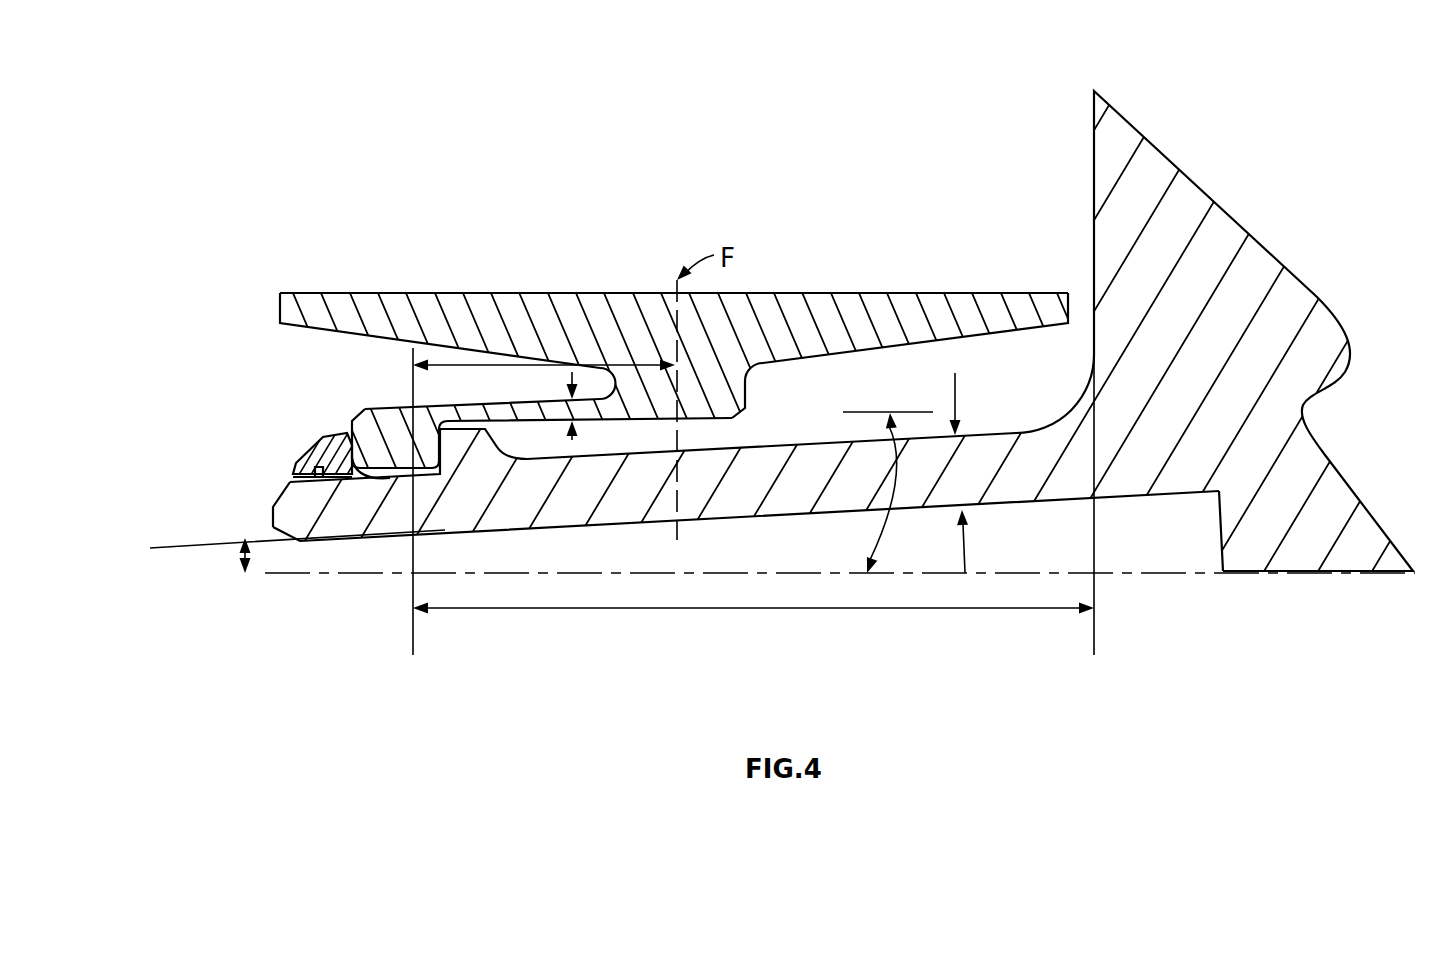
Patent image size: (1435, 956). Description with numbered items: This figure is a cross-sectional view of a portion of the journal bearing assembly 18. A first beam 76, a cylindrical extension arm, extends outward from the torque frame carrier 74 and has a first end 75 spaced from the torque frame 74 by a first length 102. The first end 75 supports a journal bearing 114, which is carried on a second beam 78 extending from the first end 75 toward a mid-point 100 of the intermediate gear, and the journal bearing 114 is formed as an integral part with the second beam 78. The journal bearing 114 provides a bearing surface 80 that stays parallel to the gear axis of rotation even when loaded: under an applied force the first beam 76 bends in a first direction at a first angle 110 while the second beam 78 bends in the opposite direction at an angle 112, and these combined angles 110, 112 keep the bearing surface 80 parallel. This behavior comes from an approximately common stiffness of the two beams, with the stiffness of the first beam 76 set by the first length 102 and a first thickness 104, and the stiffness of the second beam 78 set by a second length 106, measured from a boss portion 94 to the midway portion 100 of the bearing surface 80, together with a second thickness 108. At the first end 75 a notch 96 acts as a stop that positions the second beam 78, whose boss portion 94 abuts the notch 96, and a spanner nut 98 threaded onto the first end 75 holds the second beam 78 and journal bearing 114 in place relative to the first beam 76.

The journal bearing assembly 18 is at (950, 188).
The torque frame carrier 74 is at (1255, 427).
The first end 75 is at (340, 548).
The first beam 76 is at (558, 512).
The second beam 78 is at (497, 412).
The bearing surface 80 is at (463, 280).
The boss portion 94 is at (387, 430).
The notch 96 is at (487, 443).
The spanner nut 98 is at (327, 457).
The mid-point 100 is at (670, 408).
The first length 102 is at (790, 612).
The first thickness 104 is at (955, 393).
The second length 106 is at (484, 368).
The second thickness 108 is at (577, 442).
The first angle 110 is at (245, 556).
The angle 112 is at (880, 543).
The journal bearing 114 is at (816, 320).